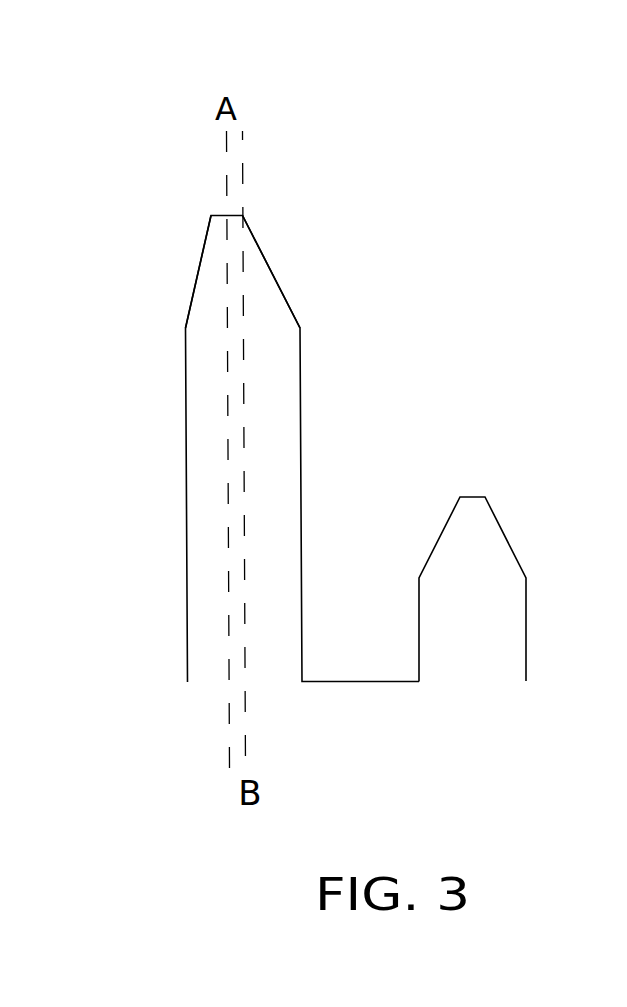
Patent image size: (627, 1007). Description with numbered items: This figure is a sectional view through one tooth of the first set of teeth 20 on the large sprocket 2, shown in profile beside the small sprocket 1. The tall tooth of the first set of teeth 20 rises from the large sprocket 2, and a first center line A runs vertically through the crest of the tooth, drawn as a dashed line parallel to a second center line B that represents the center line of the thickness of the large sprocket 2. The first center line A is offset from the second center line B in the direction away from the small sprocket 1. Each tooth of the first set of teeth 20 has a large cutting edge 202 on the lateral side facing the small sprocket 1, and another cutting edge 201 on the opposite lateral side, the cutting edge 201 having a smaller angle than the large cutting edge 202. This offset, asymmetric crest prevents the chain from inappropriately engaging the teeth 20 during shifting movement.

The small sprocket 1 is at (507, 623).
The large sprocket 2 is at (261, 434).
The first set of teeth 20 is at (249, 257).
The cutting edge 201 is at (197, 278).
The large cutting edge 202 is at (270, 270).